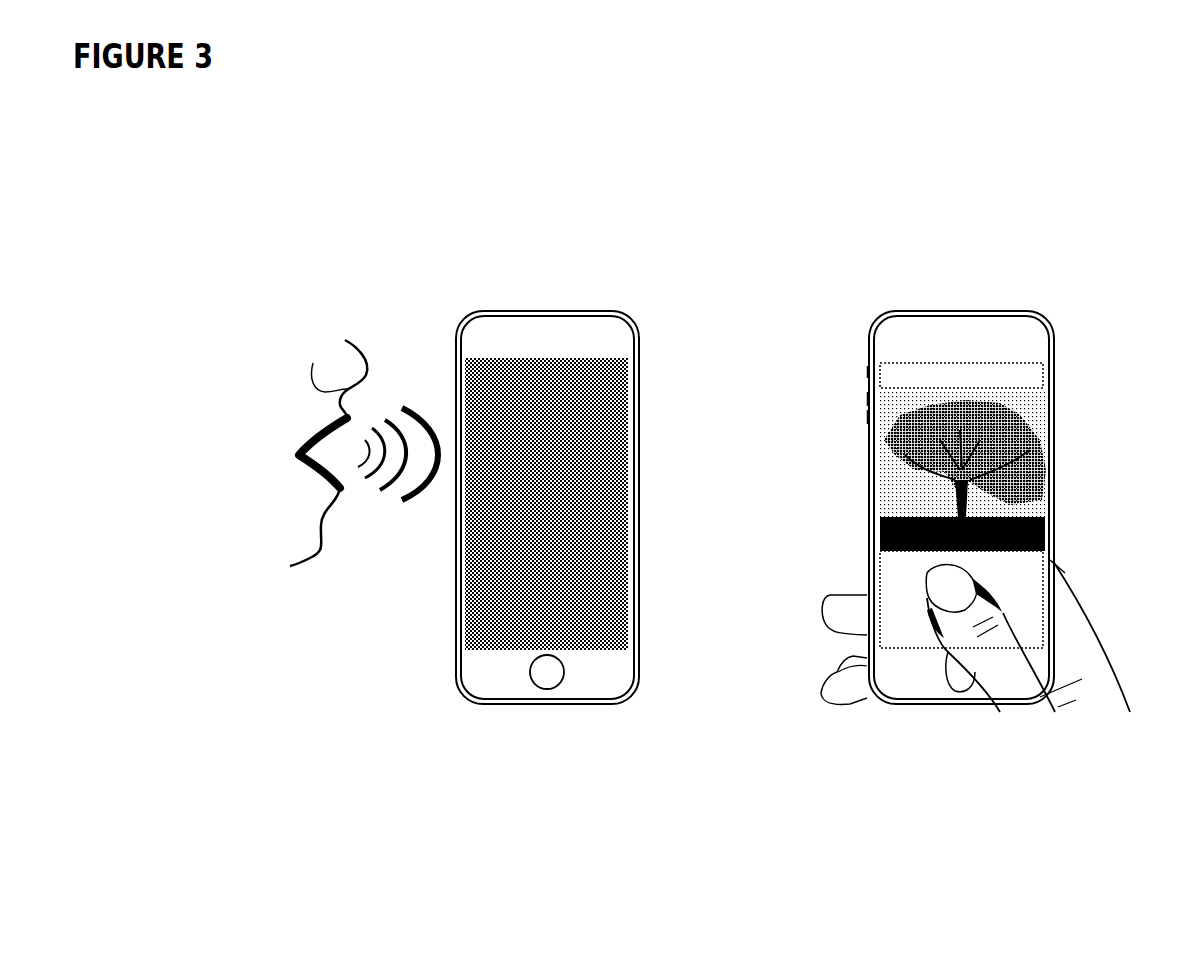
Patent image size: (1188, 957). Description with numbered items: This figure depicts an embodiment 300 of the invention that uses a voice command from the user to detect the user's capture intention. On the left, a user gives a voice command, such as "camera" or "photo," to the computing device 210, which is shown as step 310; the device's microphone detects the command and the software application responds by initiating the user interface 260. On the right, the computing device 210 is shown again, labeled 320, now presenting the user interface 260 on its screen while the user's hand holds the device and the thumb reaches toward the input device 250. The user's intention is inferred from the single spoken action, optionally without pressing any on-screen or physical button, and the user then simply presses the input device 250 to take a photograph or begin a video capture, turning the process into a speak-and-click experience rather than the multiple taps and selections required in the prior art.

The embodiment 300 is at (627, 96).
The voice command step 310 is at (465, 264).
The user touch input / holding hand 320 is at (963, 264).
The computing device 210 is at (551, 752).
The user interface 260 is at (1045, 548).
The input device 250 is at (1017, 588).